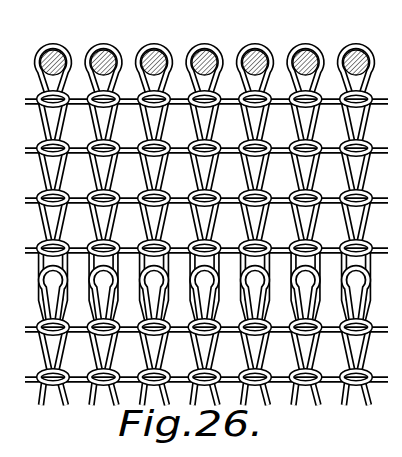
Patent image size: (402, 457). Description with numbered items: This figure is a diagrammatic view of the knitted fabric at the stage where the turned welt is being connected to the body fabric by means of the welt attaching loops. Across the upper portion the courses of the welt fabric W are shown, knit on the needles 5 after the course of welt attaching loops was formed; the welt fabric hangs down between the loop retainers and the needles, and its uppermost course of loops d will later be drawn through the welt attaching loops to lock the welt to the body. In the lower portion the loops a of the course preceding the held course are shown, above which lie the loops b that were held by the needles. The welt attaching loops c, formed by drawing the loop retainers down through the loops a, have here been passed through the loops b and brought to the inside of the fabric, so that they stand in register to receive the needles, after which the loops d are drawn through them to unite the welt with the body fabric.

The loops d is at (212, 48).
The needles 5 is at (318, 50).
The welt fabric w is at (365, 168).
The loops b is at (268, 288).
The welt attaching loops c is at (240, 293).
The loops a is at (271, 357).